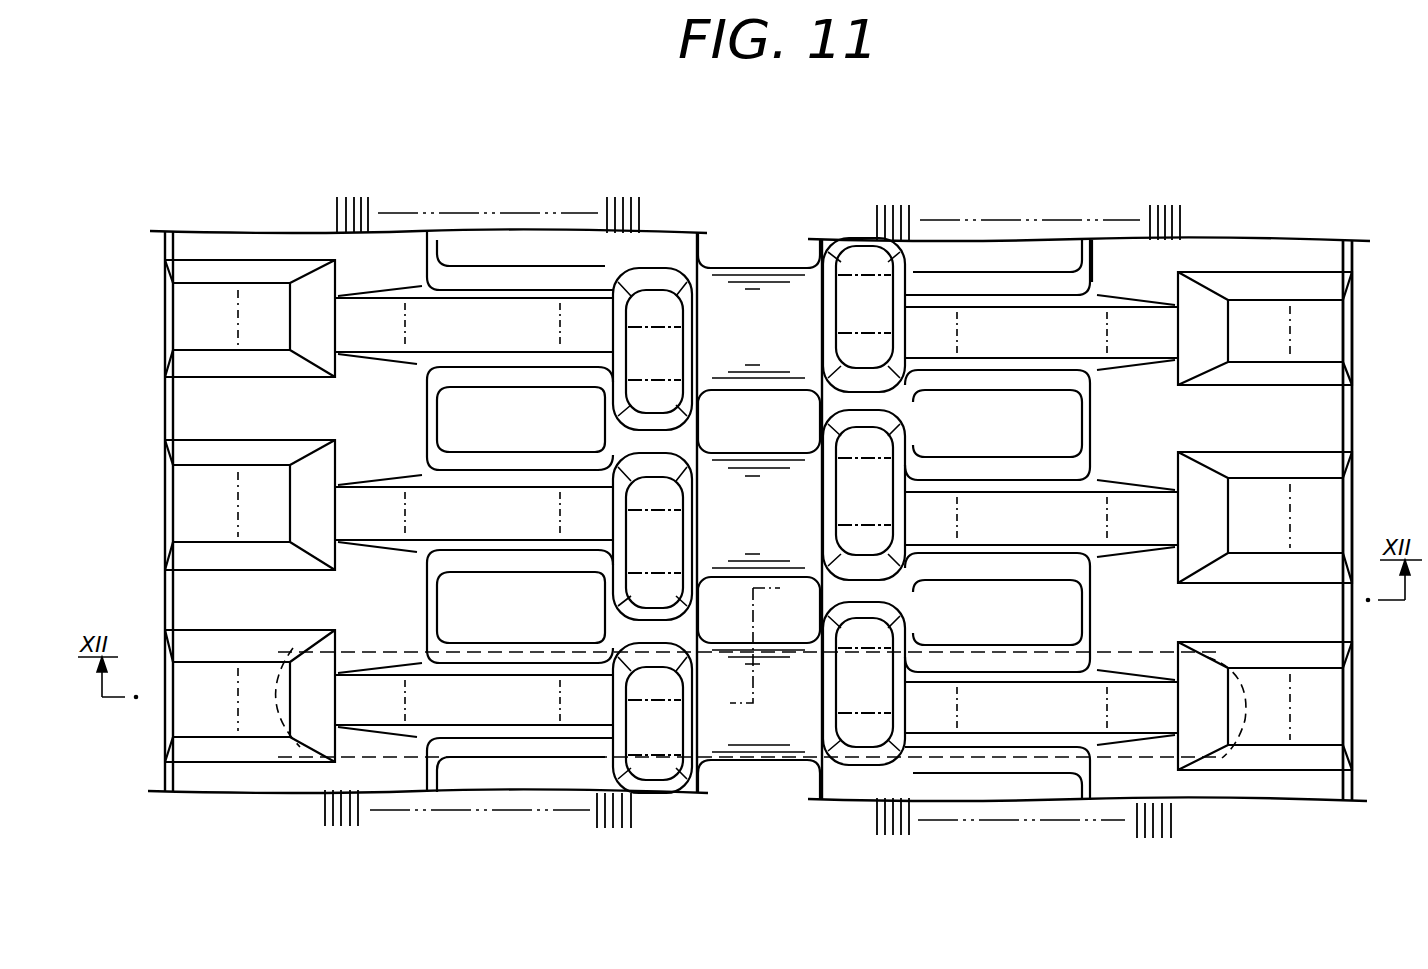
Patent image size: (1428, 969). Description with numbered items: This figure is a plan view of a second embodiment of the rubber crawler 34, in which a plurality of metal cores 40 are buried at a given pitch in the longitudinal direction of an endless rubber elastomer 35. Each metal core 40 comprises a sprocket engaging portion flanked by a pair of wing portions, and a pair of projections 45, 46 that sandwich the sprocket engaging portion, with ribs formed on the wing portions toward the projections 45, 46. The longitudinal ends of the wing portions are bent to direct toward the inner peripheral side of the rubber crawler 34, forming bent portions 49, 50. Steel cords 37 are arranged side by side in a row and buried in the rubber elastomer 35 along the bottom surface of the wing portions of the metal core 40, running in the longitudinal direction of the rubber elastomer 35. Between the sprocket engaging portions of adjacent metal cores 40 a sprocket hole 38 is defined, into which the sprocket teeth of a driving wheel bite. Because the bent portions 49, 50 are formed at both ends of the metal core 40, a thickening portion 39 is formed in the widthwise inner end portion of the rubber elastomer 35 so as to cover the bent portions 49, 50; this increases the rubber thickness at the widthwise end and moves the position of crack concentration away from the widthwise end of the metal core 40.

The rubber crawler 34 is at (1262, 240).
The rubber elastomer 35 is at (1118, 250).
The steel cords 37 is at (335, 212).
The sprocket hole 38 is at (747, 413).
The thickening portion 39 is at (265, 313).
The metal core 40 is at (1113, 758).
The projection 45 is at (862, 723).
The projection 46 is at (648, 737).
The bent portion 49 is at (1248, 720).
The bent portion 50 is at (268, 706).